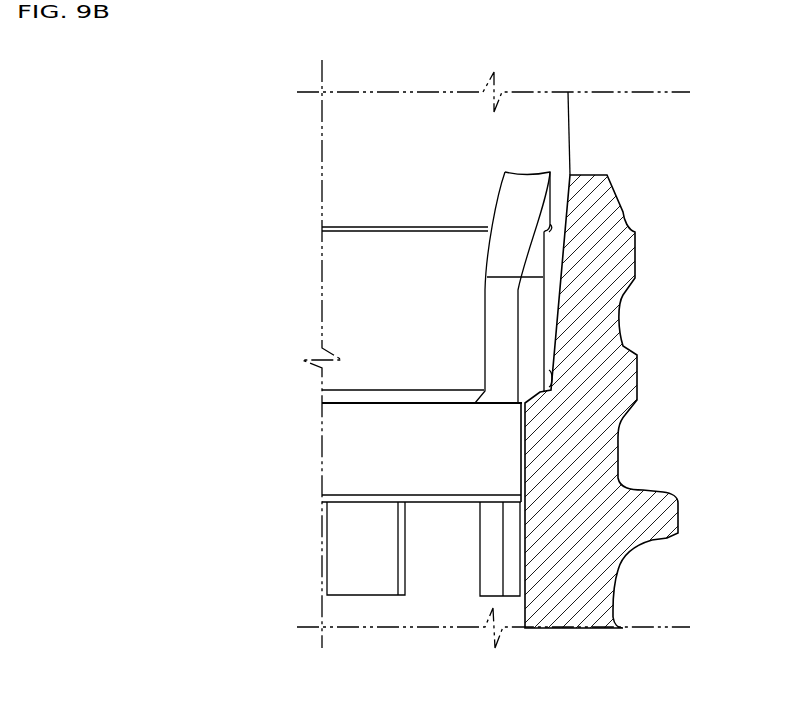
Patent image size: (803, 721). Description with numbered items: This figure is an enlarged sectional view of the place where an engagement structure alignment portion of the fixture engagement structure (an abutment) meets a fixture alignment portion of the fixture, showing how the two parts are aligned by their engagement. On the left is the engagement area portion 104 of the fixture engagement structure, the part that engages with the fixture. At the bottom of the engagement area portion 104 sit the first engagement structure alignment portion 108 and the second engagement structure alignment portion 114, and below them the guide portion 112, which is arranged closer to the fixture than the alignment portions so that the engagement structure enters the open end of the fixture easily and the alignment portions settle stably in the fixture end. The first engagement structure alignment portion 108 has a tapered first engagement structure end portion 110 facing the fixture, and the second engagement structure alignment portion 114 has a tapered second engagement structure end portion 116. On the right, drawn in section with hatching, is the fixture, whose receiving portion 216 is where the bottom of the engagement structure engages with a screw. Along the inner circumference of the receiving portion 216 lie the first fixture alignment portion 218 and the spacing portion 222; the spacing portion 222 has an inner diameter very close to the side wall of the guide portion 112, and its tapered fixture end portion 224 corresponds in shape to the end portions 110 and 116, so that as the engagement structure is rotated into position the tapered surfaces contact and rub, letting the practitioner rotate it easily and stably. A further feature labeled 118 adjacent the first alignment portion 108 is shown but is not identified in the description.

The engagement area portion 104 is at (340, 162).
The second engagement structure alignment portion 114 is at (340, 302).
The second engagement structure end portion 116 is at (343, 396).
The guide portion 112 is at (340, 468).
The first engagement structure alignment portion 108 is at (536, 305).
The inner wall 118 is at (497, 338).
The fixture end portion 224 is at (552, 370).
The first engagement structure end portion 110 is at (528, 405).
The receiving portion 216 is at (570, 176).
The spacing portion 222 is at (512, 450).
The first fixture alignment portion 218 is at (512, 538).